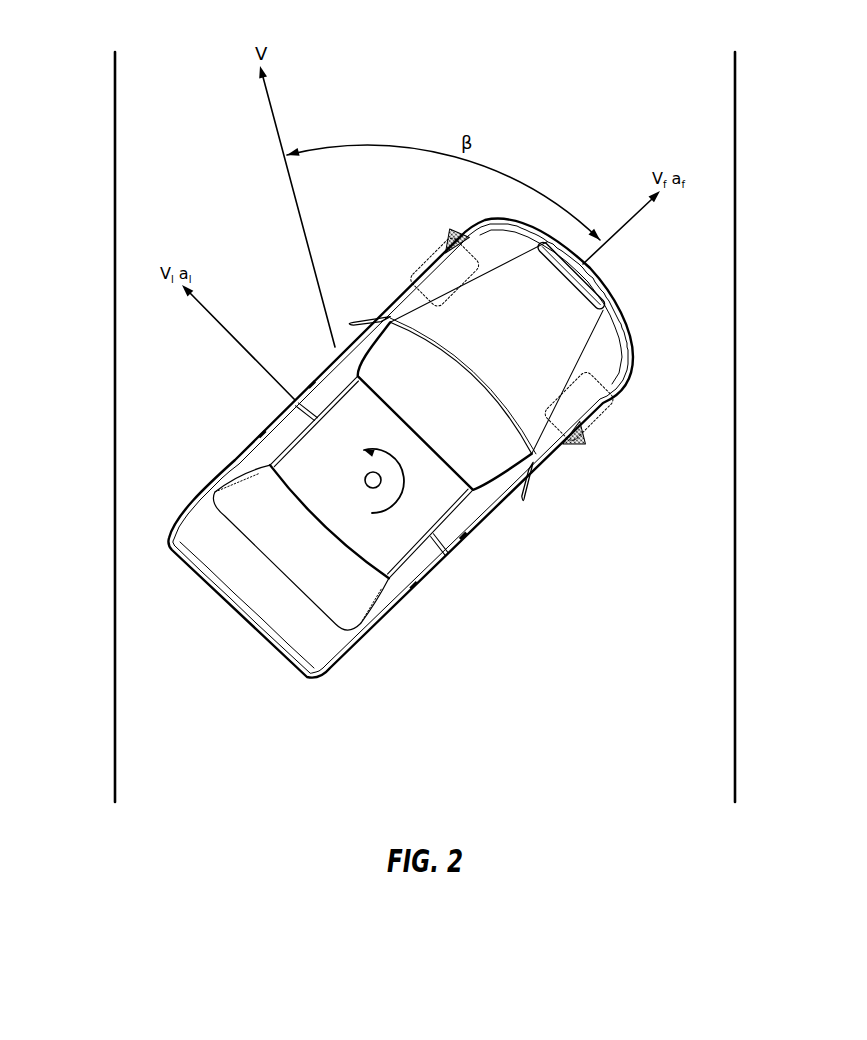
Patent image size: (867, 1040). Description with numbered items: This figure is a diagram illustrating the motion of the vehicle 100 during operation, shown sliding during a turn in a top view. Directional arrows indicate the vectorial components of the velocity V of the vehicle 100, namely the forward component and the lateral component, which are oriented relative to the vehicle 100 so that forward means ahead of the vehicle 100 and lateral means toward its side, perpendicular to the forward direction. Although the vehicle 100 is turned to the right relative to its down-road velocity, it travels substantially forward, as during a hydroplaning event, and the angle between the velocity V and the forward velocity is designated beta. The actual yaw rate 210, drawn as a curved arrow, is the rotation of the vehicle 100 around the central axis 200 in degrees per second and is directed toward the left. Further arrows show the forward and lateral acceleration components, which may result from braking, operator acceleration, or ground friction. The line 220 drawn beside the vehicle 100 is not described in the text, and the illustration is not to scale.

The vehicle 100 is at (505, 584).
The central axis 200 is at (364, 477).
The actual yaw rate 210 is at (397, 456).
The lane boundary line 220 is at (128, 123).